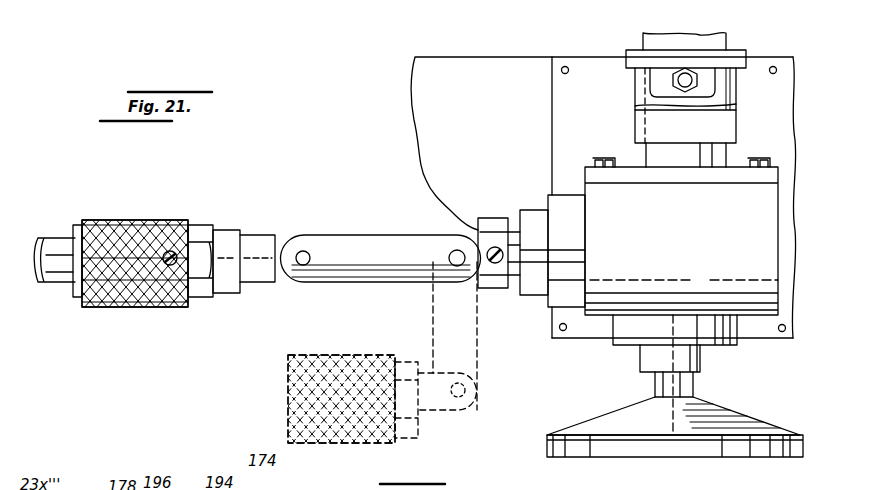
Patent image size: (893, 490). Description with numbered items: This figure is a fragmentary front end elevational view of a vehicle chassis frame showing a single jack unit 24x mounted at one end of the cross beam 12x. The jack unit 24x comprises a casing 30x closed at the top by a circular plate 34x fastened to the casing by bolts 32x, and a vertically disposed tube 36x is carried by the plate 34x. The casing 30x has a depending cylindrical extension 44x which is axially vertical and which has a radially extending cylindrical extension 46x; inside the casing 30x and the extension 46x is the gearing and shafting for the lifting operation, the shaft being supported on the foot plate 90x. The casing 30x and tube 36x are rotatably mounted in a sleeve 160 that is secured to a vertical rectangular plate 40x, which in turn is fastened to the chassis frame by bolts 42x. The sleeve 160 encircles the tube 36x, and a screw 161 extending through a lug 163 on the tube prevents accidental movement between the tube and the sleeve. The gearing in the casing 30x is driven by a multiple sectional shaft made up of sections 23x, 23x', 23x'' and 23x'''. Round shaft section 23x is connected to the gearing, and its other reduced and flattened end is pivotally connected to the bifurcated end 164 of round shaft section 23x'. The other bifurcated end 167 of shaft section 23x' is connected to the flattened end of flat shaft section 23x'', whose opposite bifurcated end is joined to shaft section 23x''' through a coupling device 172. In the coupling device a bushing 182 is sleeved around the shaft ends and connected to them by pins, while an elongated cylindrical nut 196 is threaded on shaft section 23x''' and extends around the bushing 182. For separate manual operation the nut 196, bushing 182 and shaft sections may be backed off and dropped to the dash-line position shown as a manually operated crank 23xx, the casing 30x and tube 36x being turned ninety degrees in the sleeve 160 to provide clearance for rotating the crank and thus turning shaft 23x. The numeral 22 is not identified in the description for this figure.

The cross beam 12x is at (446, 57).
The bolts 42x is at (565, 66).
The rod 22 is at (62, 232).
The round shaft section 23x is at (495, 229).
The round shaft section 23x' is at (381, 239).
The flat shaft section 23x'' is at (263, 235).
The shaft section 23x''' is at (50, 286).
The manually operated crank 23xx is at (455, 322).
The coupling device 172 is at (135, 207).
The elongated cylindrical nut 196 is at (156, 308).
The bushing 182 is at (222, 298).
The bifurcated end 164 is at (305, 250).
The bifurcated end 167 is at (290, 286).
The cylindrical extension 46x is at (558, 295).
The casing 30x is at (720, 236).
The vertical rectangular plate 40x is at (598, 72).
The sleeve 160 is at (640, 90).
The screw 161 is at (695, 77).
The lug 163 is at (664, 95).
The vertically disposed tube 36x is at (655, 152).
The bolts 32x is at (604, 165).
The circular plate 34x is at (732, 176).
The depending cylindrical extension 44x is at (716, 346).
The jack unit 24x is at (626, 378).
The foot plate 90x is at (582, 446).